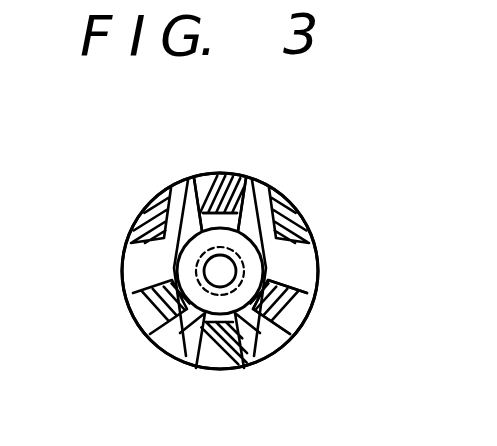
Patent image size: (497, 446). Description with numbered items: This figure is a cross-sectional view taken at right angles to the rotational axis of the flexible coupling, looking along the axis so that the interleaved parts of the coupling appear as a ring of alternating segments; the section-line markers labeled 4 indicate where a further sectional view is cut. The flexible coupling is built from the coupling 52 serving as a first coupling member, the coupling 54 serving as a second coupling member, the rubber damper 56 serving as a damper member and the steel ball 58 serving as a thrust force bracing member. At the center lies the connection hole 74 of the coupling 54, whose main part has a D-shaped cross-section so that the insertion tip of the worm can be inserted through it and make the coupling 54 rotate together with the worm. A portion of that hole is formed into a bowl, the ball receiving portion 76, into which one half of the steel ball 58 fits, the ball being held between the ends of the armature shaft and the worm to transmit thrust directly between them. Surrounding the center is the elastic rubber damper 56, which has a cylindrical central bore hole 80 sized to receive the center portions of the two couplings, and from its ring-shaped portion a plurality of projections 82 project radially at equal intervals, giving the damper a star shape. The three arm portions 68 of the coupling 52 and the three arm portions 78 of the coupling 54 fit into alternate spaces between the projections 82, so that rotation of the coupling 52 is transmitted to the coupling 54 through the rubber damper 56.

The section line IV-IV 4 is at (222, 170).
The coupling 52 is at (305, 225).
The coupling 54 is at (307, 320).
The rubber damper 56 is at (268, 185).
The steel ball 58 is at (204, 270).
The arm portions 68 is at (140, 218).
The connection hole 74 is at (240, 292).
The ball receiving portion 76 is at (165, 357).
The arm portions 78 is at (245, 175).
The central bore hole 80 is at (125, 258).
The projections 82 is at (184, 192).